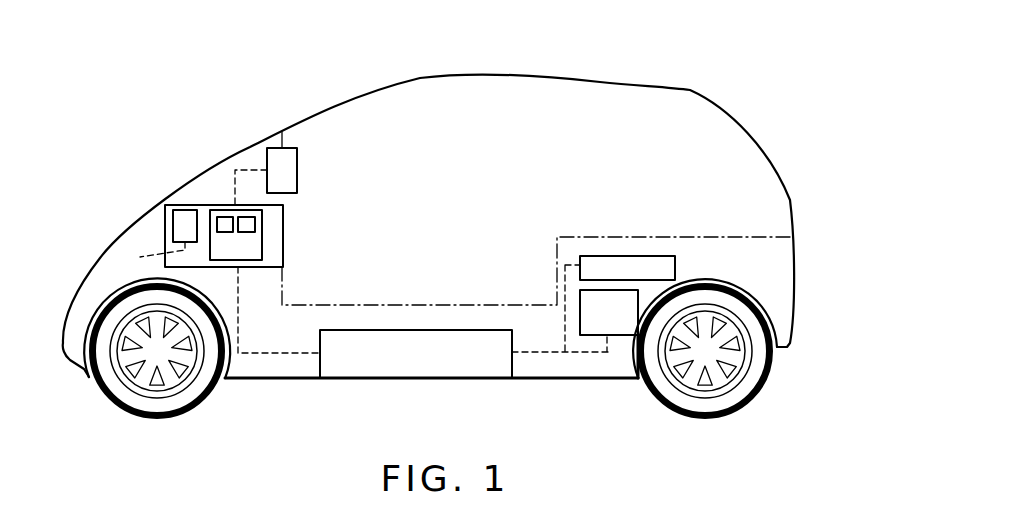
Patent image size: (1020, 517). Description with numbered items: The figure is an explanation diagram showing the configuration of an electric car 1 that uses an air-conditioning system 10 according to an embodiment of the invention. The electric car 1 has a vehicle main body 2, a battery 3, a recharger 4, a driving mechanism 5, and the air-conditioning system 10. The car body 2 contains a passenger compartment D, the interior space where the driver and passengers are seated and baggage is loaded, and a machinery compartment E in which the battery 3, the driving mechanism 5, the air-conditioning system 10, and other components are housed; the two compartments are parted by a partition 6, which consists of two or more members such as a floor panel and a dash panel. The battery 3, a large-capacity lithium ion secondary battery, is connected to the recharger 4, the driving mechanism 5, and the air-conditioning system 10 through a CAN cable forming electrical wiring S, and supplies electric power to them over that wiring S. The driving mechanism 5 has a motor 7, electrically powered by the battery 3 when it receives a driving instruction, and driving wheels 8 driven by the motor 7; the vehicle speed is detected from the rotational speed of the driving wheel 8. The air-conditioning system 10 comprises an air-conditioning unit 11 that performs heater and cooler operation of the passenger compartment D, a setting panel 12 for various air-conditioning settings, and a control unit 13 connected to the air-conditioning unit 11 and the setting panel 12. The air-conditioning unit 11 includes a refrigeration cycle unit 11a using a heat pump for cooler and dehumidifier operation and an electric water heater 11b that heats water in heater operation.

The electric car 1 is at (428, 190).
The vehicle main body 2 is at (577, 78).
The battery 3 is at (413, 330).
The recharger 4 is at (635, 255).
The driving mechanism 5 is at (609, 366).
The partition 6 is at (712, 235).
The motor 7 is at (587, 337).
The driving wheel 8 is at (148, 420).
The air-conditioning system 10 is at (254, 190).
The air-conditioning unit 11 is at (257, 187).
The refrigeration cycle unit 11a is at (230, 215).
The electric water heater 11b is at (255, 225).
The setting panel 12 is at (297, 167).
The control unit 13 is at (183, 207).
The electrical wiring S is at (250, 170).
The passenger compartment D is at (508, 195).
The machinery compartment E is at (533, 378).